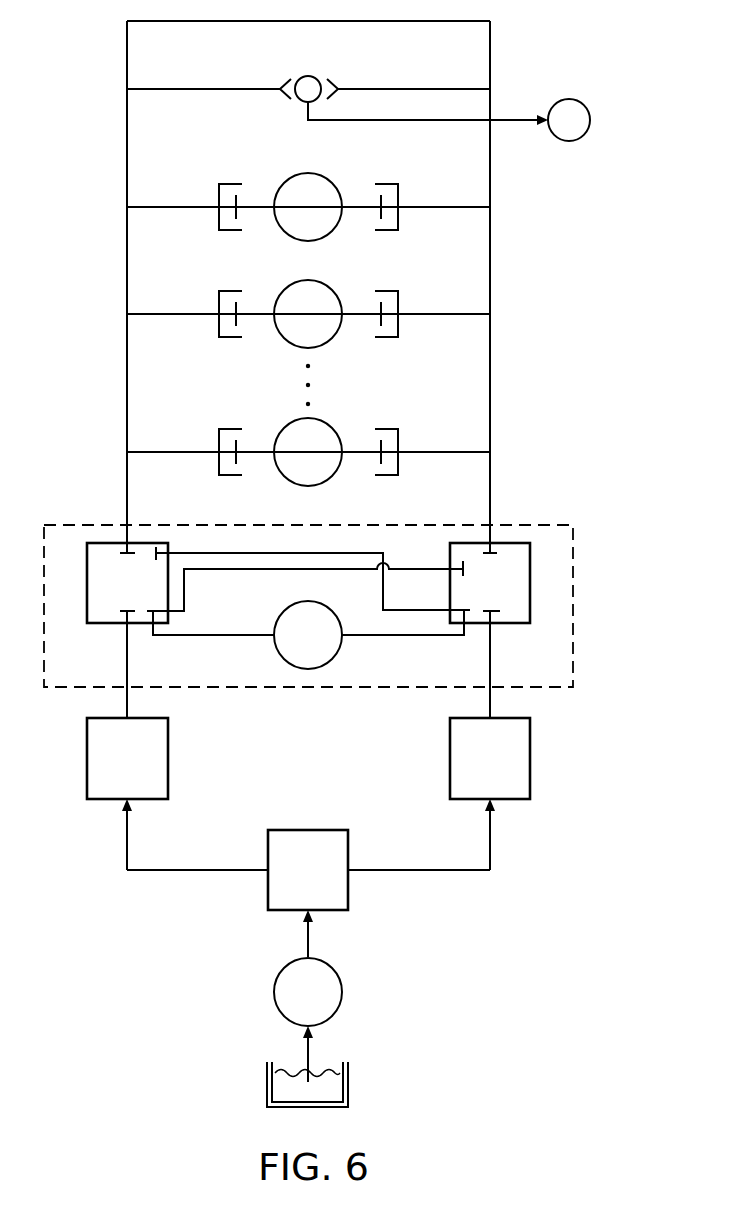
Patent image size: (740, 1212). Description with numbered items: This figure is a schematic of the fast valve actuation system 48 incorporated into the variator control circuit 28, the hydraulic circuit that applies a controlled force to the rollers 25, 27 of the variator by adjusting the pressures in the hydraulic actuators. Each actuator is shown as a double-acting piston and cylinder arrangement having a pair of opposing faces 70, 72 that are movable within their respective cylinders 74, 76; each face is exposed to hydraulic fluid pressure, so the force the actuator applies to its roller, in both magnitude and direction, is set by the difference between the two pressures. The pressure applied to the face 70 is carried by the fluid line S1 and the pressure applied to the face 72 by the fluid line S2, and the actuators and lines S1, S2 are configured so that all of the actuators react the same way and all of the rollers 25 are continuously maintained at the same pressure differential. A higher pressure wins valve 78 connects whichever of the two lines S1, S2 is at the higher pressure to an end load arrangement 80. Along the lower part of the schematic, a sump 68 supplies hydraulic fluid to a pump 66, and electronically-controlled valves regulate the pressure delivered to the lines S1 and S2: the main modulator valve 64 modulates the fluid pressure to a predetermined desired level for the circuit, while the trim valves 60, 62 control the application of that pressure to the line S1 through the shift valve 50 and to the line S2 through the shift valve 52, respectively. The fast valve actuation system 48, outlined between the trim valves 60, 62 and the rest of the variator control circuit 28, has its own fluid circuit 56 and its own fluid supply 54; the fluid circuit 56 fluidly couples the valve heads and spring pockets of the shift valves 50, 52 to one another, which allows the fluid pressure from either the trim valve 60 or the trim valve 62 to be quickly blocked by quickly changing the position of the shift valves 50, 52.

The rollers 25 is at (320, 333).
The additive tank 27 is at (318, 181).
The variator control circuit 28 is at (610, 175).
The fast valve actuation system 48 is at (573, 558).
The shift valve 50 is at (100, 623).
The shift valve 52 is at (517, 623).
The fluid supply 54 is at (340, 648).
The fluid circuit 56 is at (208, 585).
The trim valve 60 is at (87, 757).
The trim valve 62 is at (530, 757).
The main modulator valve 64 is at (348, 847).
The pump 66 is at (342, 993).
The sump 68 is at (348, 1080).
The opposing face 70 is at (241, 303).
The opposing face 72 is at (378, 303).
The cylinder 74 is at (219, 332).
The cylinder 76 is at (398, 332).
The higher pressure wins valve 78 is at (339, 86).
The end load arrangement 80 is at (568, 99).
The fluid line S1 is at (126, 485).
The fluid line S2 is at (490, 484).